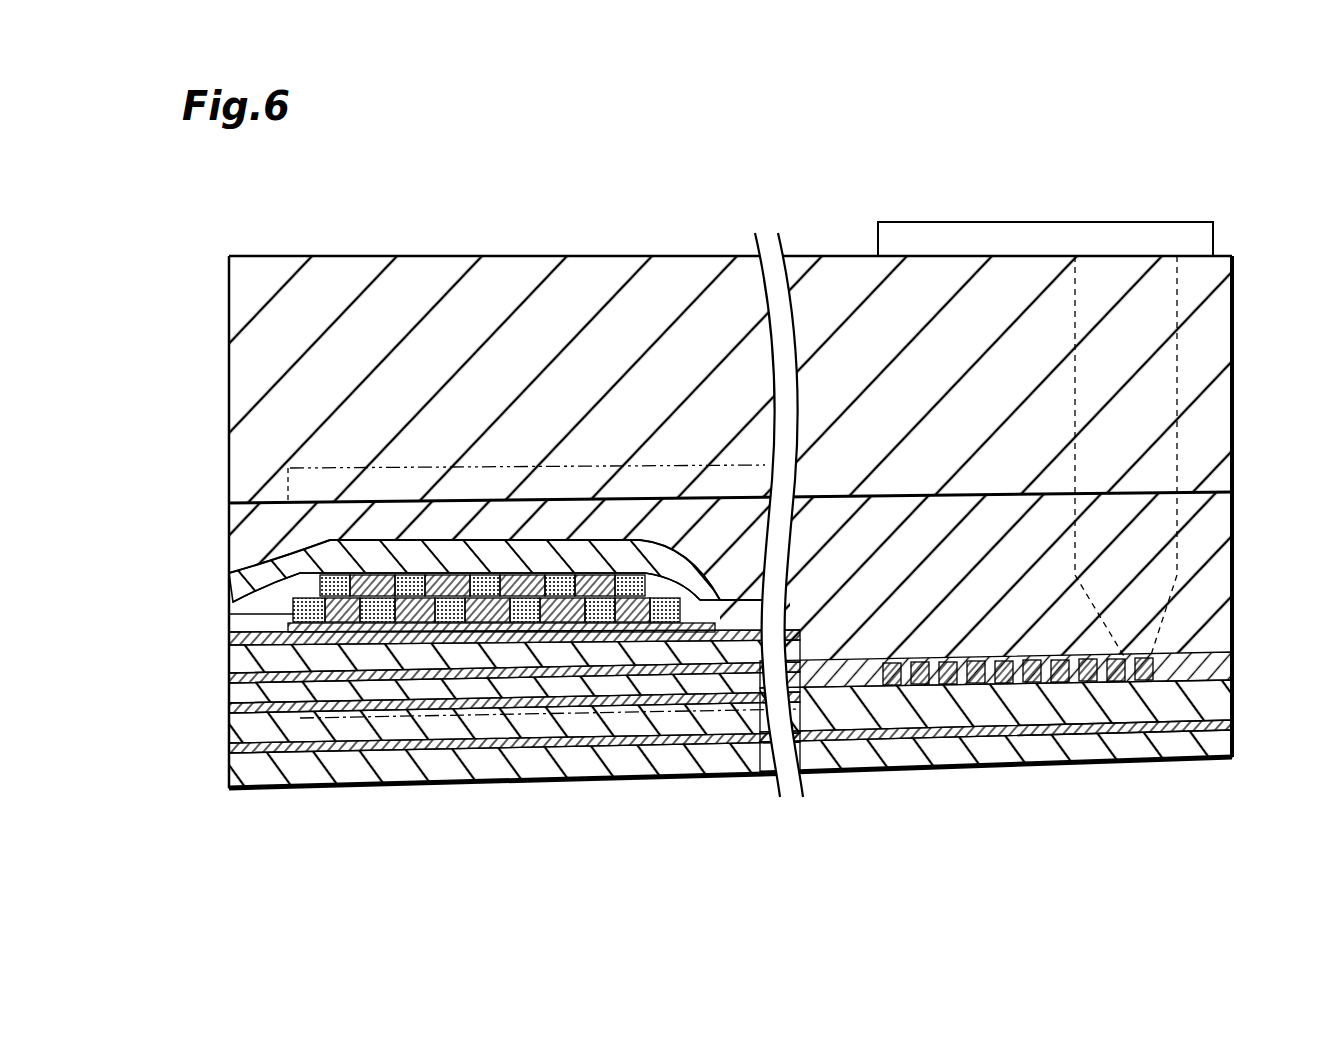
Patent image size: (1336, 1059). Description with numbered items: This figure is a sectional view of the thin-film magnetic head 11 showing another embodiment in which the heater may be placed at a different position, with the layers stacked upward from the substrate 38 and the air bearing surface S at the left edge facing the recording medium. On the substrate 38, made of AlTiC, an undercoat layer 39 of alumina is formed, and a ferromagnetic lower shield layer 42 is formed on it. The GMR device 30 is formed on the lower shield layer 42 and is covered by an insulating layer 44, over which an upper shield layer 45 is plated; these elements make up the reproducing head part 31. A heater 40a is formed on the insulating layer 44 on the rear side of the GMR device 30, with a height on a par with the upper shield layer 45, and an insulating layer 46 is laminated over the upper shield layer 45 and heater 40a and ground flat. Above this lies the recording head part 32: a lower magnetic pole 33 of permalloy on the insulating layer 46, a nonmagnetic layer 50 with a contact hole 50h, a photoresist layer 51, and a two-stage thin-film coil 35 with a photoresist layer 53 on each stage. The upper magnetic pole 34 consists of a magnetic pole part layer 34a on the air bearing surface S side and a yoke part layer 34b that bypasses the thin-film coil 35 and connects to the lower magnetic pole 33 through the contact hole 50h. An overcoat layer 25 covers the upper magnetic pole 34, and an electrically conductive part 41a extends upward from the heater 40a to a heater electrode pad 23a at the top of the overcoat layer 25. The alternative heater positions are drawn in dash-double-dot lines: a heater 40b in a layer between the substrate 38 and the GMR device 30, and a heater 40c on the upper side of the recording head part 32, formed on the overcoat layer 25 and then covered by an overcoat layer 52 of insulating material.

The thin-film magnetic head 11 is at (222, 214).
The air bearing surface S is at (227, 422).
The overcoat layer 52 is at (227, 353).
The overcoat layer 25 is at (230, 533).
The heater electrode pad 23a is at (1160, 237).
The electrically conductive part 41a is at (1183, 430).
The recording head part 32 is at (73, 510).
The upper magnetic pole 34 is at (399, 562).
The magnetic pole part layer 34a is at (230, 583).
The yoke part layer 34b is at (230, 553).
The thin-film coil 35 is at (342, 612).
The photoresist layer 53 is at (318, 585).
The photoresist layer 51 is at (288, 626).
The nonmagnetic layer 50 is at (285, 634).
The contact hole 50h is at (737, 600).
The lower magnetic pole 33 is at (240, 640).
The insulating layer 46 is at (240, 660).
The heater 40a is at (1233, 668).
The heater 40b is at (532, 765).
The heater 40c is at (612, 445).
The upper shield layer 45 is at (233, 690).
The insulating layer 44 is at (233, 700).
The reproducing head part 31 is at (126, 712).
The GMR device 30 is at (233, 710).
The lower shield layer 42 is at (233, 733).
The undercoat layer 39 is at (236, 765).
The substrate 38 is at (282, 770).